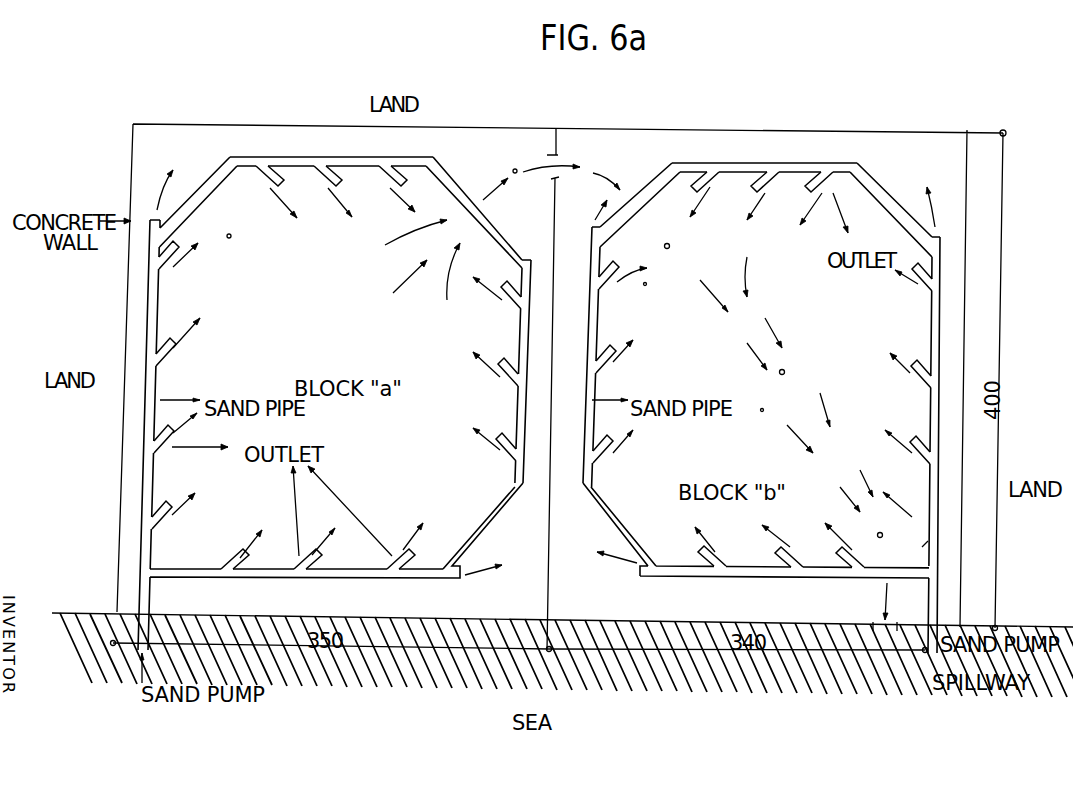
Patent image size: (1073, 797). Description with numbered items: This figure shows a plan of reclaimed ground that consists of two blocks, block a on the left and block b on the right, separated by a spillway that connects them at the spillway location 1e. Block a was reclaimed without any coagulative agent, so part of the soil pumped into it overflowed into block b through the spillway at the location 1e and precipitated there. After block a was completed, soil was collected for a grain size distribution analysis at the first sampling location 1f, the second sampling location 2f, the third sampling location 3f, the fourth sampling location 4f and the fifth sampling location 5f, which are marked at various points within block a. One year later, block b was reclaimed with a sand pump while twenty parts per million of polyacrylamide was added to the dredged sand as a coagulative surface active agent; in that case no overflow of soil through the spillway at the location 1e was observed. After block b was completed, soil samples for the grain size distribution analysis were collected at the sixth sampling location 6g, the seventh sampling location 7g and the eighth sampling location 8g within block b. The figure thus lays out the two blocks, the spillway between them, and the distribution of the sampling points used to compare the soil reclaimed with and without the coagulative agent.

The spillway location 1e is at (557, 167).
The soil sampling location No. 1 1f is at (258, 242).
The soil sampling location No. 2 2f is at (526, 159).
The soil sampling location No. 3 3f is at (676, 277).
The soil sampling location No. 4 4f is at (792, 404).
The soil sampling location No. 5 5f is at (904, 554).
The soil sampling location No. 6 6g is at (707, 234).
The soil sampling location No. 7 7g is at (816, 358).
The soil sampling location No. 8 8g is at (891, 522).